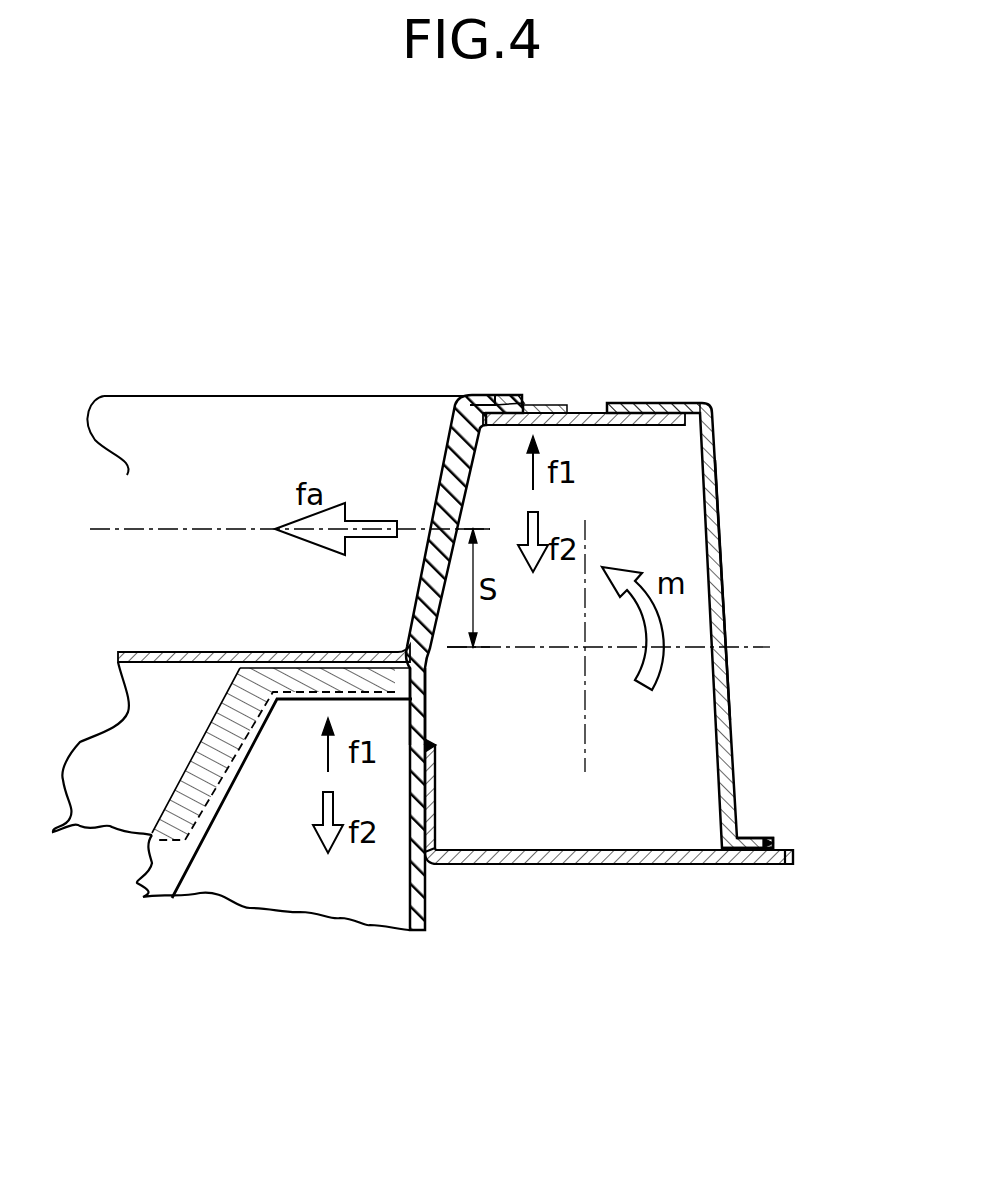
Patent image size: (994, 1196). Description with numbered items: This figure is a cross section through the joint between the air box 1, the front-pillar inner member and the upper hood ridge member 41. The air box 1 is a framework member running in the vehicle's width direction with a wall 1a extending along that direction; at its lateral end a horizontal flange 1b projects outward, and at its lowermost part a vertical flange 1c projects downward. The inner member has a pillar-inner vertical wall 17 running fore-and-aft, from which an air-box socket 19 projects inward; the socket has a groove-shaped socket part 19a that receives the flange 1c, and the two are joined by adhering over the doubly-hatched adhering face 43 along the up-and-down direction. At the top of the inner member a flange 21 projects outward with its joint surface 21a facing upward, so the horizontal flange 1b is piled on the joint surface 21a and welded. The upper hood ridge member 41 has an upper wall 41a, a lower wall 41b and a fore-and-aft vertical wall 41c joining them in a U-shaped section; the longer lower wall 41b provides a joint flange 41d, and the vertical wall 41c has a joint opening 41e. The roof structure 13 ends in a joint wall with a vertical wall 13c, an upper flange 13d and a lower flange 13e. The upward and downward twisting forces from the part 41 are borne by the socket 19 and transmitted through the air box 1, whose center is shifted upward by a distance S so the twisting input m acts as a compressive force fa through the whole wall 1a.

The air box 1 is at (445, 478).
The wall 1a is at (270, 427).
The horizontal flange 1b is at (500, 395).
The vertical flange 1c is at (107, 810).
The roof structure 13 is at (720, 463).
The vertical wall 13c is at (722, 553).
The upper flange 13d is at (652, 403).
The lower flange 13e is at (745, 838).
The pillar-inner vertical wall 17 is at (423, 690).
The air-box socket 19 is at (350, 900).
The socket part 19a is at (220, 703).
The flange 21 is at (538, 400).
The joint surface 21a is at (517, 398).
The upper hood ridge member 41 is at (658, 862).
The upper wall 41a is at (632, 425).
The lower wall 41b is at (635, 850).
The fore-and-aft-directional vertical wall 41c is at (437, 790).
The joint flange 41d is at (795, 853).
The joint opening 41e is at (433, 745).
The adhering face 43 is at (210, 800).